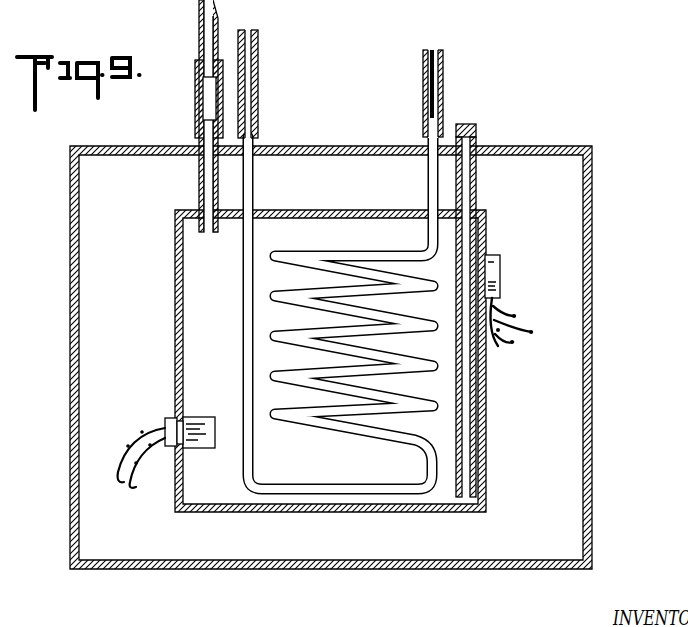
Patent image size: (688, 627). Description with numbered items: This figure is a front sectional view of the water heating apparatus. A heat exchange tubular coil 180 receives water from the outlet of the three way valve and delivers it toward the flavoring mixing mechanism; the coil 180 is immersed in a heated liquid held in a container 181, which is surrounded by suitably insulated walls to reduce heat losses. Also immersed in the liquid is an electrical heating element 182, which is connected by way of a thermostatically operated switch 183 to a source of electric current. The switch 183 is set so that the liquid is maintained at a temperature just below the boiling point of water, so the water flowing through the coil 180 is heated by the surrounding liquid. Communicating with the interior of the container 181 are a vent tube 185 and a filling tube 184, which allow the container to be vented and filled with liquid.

The heat exchange tubular coil 180 is at (319, 456).
The container 181 is at (212, 486).
The electrical heating element 182 is at (188, 421).
The thermostatically operated switch 183 is at (500, 270).
The filling tube 184 is at (478, 131).
The vent tube 185 is at (198, 97).